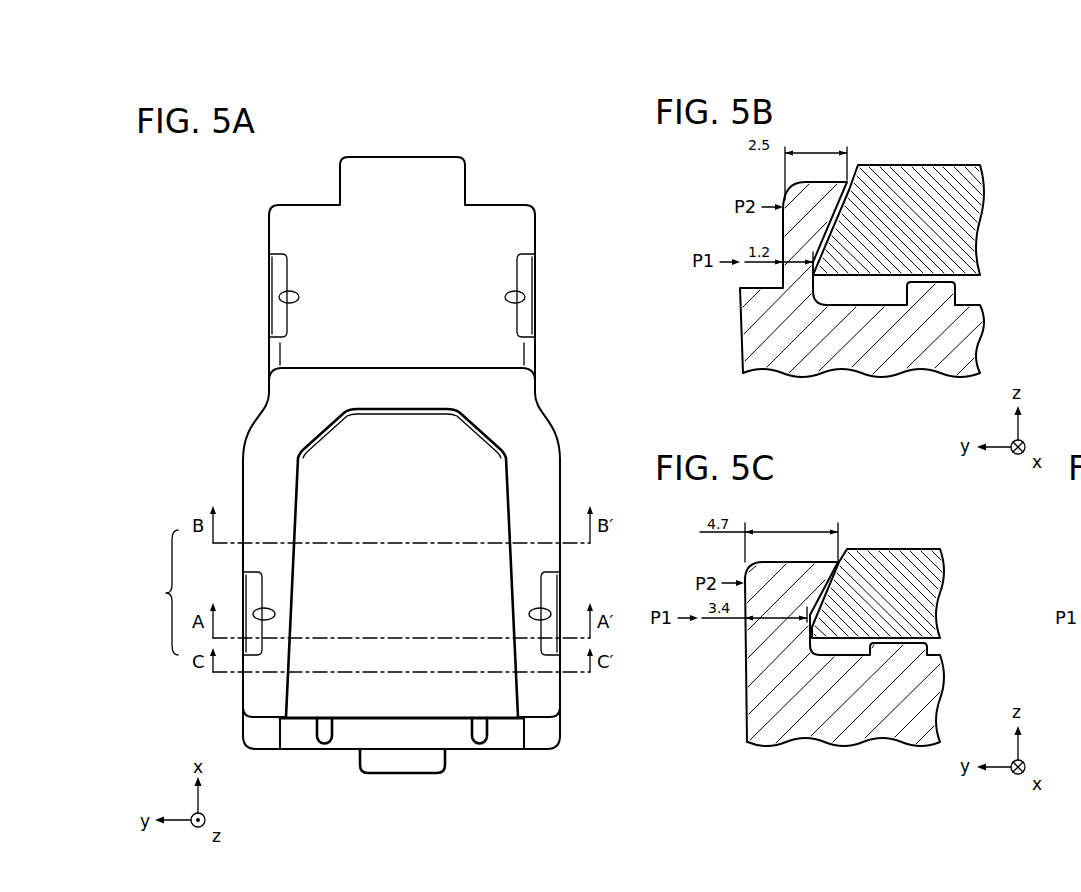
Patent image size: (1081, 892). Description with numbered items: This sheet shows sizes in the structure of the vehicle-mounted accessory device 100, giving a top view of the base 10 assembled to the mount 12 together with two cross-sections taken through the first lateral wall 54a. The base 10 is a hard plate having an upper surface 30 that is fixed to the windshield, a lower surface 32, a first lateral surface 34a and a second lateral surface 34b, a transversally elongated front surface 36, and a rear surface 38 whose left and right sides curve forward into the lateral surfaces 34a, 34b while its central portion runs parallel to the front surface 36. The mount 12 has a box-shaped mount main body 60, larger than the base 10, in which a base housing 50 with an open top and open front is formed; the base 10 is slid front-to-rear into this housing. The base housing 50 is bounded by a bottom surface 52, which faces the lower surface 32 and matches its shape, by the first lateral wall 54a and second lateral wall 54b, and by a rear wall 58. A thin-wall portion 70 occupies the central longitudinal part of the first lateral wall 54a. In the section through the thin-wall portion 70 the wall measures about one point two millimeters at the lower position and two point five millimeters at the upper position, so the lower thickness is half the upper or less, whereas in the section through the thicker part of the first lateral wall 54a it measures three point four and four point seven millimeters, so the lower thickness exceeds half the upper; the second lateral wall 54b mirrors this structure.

In FIG. 5A, the base 10 is at (310, 718).
In FIG. 5B, the base 10 is at (927, 163).
In FIG. 5C, the base 10 is at (905, 549).
In FIG. 5A, the mount 12 is at (248, 441).
In FIG. 5B, the mount 12 is at (740, 373).
In FIG. 5C, the mount 12 is at (747, 742).
In FIG. 5A, the upper surface 30 is at (337, 720).
In FIG. 5B, the upper surface 30 is at (898, 165).
In FIG. 5C, the upper surface 30 is at (873, 549).
In FIG. 5B, the lower surface 32 is at (973, 277).
In FIG. 5C, the lower surface 32 is at (942, 636).
In FIG. 5A, the first lateral surface 34a is at (286, 682).
In FIG. 5B, the first lateral surface 34a is at (849, 181).
In FIG. 5C, the first lateral surface 34a is at (838, 562).
In FIG. 5A, the second lateral surface 34b is at (518, 682).
In FIG. 5A, the front surface 36 is at (465, 712).
In FIG. 5A, the rear surface 38 is at (435, 416).
In FIG. 5A, the base housing 50 is at (496, 728).
In FIG. 5B, the base housing 50 is at (977, 298).
In FIG. 5C, the base housing 50 is at (942, 648).
In FIG. 5B, the bottom surface 52 is at (888, 307).
In FIG. 5C, the bottom surface 52 is at (855, 657).
In FIG. 5A, the first lateral wall 54a is at (268, 492).
In FIG. 5B, the first lateral wall 54a is at (812, 190).
In FIG. 5C, the first lateral wall 54a is at (787, 565).
In FIG. 5A, the second lateral wall 54b is at (535, 492).
In FIG. 5A, the rear wall 58 is at (270, 391).
In FIG. 5A, the mount main body 60 is at (250, 592).
In FIG. 5B, the mount main body 60 is at (962, 368).
In FIG. 5C, the mount main body 60 is at (930, 714).
In FIG. 5A, the thin-wall portion 70 is at (159, 592).
In FIG. 5C, the vehicle-mounted accessory device 100 is at (745, 842).